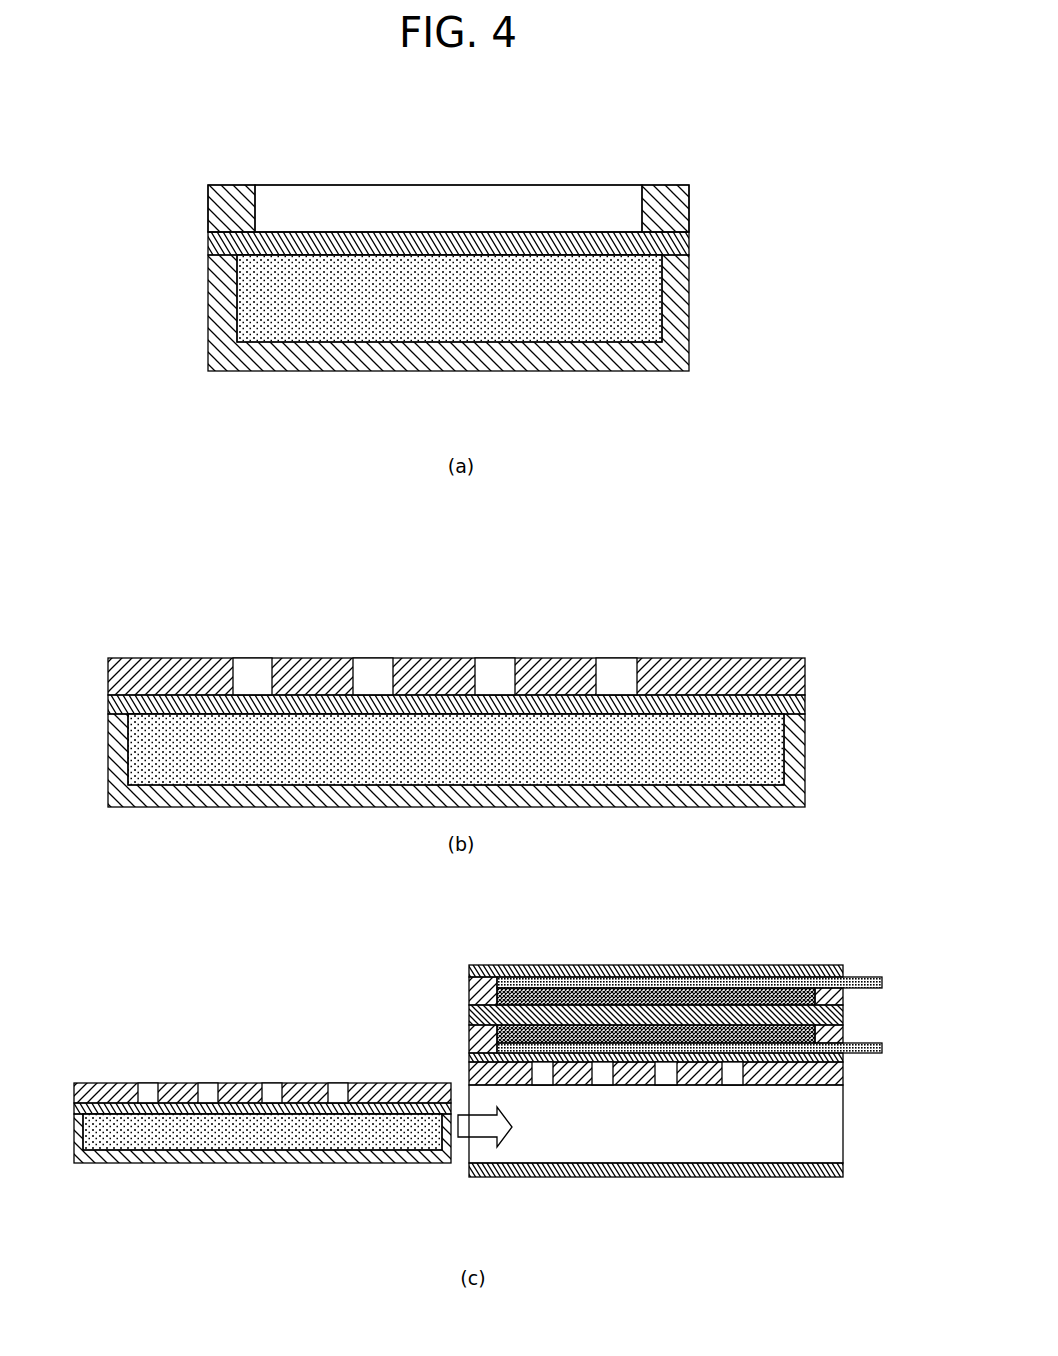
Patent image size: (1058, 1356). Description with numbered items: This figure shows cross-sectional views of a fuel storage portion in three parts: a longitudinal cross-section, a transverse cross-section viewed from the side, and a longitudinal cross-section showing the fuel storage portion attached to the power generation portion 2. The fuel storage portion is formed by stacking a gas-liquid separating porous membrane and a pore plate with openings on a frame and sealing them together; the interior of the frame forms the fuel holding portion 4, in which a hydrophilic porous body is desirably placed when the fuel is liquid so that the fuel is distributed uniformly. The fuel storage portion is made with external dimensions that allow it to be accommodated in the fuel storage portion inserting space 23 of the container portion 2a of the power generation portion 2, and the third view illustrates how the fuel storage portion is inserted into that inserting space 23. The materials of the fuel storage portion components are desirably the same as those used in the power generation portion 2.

The power generation portion 2 is at (689, 1106).
The container portion 2a is at (682, 1165).
The fuel holding portion 4 is at (448, 310).
The fuel storage portion inserting space 23 is at (669, 1128).